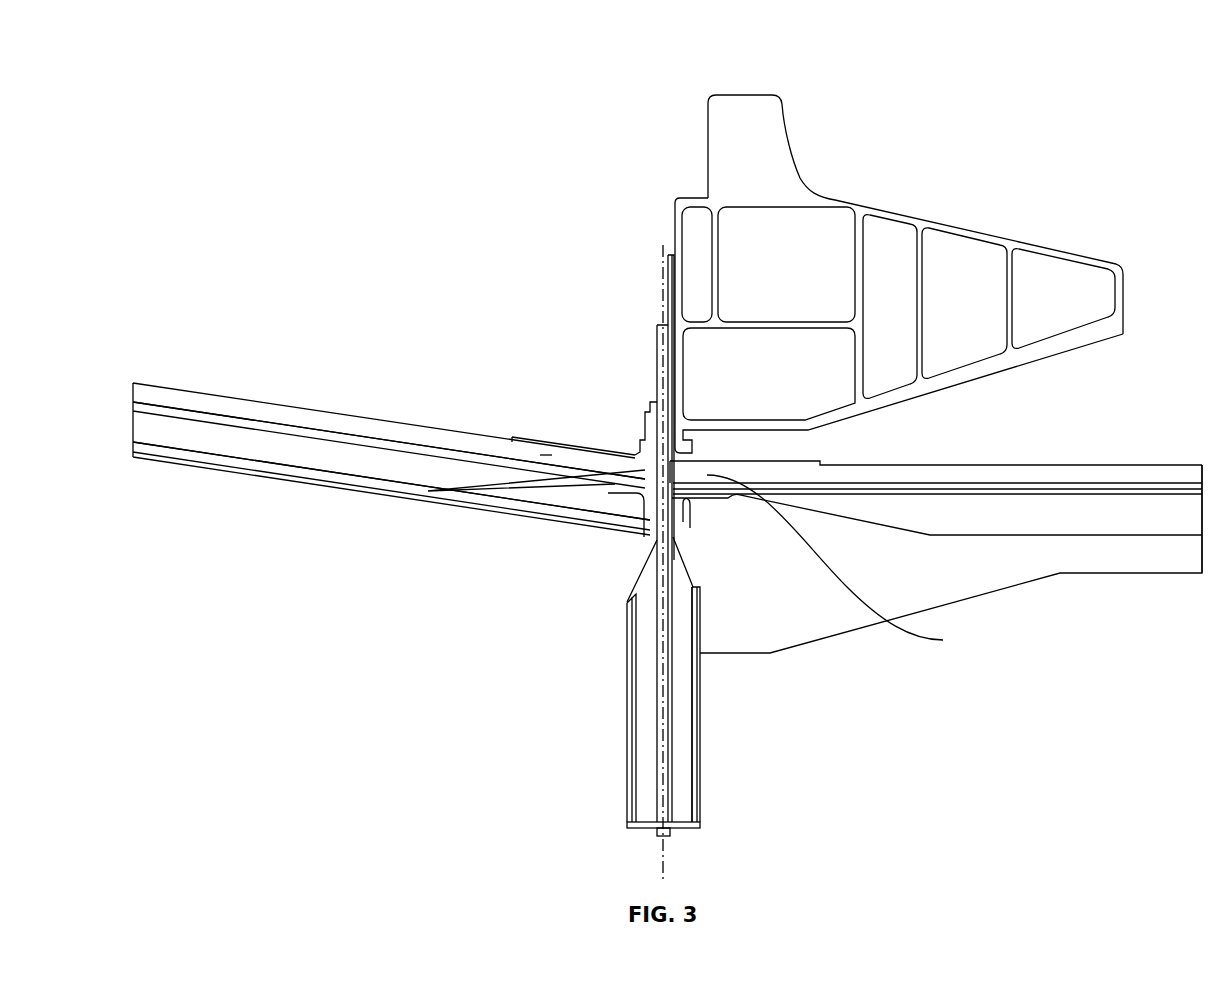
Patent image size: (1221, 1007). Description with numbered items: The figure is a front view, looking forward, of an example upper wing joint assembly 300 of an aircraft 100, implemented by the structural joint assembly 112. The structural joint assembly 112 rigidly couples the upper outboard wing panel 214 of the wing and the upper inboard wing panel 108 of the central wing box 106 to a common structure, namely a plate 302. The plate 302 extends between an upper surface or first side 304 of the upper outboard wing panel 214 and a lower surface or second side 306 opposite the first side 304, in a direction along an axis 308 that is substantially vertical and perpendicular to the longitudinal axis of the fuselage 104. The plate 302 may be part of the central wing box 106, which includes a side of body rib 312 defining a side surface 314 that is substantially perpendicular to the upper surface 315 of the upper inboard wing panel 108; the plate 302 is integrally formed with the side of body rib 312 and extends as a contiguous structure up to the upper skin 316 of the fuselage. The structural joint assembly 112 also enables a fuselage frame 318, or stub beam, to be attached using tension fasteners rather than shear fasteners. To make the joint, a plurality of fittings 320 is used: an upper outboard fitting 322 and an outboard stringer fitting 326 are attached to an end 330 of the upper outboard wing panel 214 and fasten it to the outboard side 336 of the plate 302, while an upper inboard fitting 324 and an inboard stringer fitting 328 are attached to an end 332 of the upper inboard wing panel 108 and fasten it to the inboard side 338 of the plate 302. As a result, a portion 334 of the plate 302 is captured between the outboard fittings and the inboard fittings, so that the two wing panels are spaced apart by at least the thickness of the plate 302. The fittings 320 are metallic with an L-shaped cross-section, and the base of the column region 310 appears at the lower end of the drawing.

The aircraft 100 is at (303, 158).
The fuselage 104 is at (797, 146).
The central wing box 106 is at (704, 720).
The upper inboard wing panel 108 is at (1035, 465).
The structural joint assembly 112 is at (532, 336).
The upper outboard wing panel 214 is at (308, 400).
The upper wing joint assembly 300 is at (366, 261).
The plate 302 is at (657, 350).
The first side 304 is at (190, 391).
The second side 306 is at (212, 470).
The axis 308 is at (665, 870).
The base plate 310 is at (625, 812).
The side of body rib 312 is at (683, 784).
The side surface 314 is at (619, 746).
The upper surface 315 is at (1162, 465).
The upper skin 316 is at (668, 278).
The fuselage frame 318 is at (970, 230).
The fittings 320 is at (573, 420).
The upper outboard fitting 322 is at (563, 410).
The upper inboard fitting 324 is at (805, 461).
The outboard stringer fitting 326 is at (645, 500).
The inboard stringer fitting 328 is at (683, 522).
The end 330 is at (540, 455).
The end 332 is at (847, 562).
The portion 334 is at (617, 477).
The outboard side 336 is at (314, 685).
The inboard side 338 is at (1004, 765).